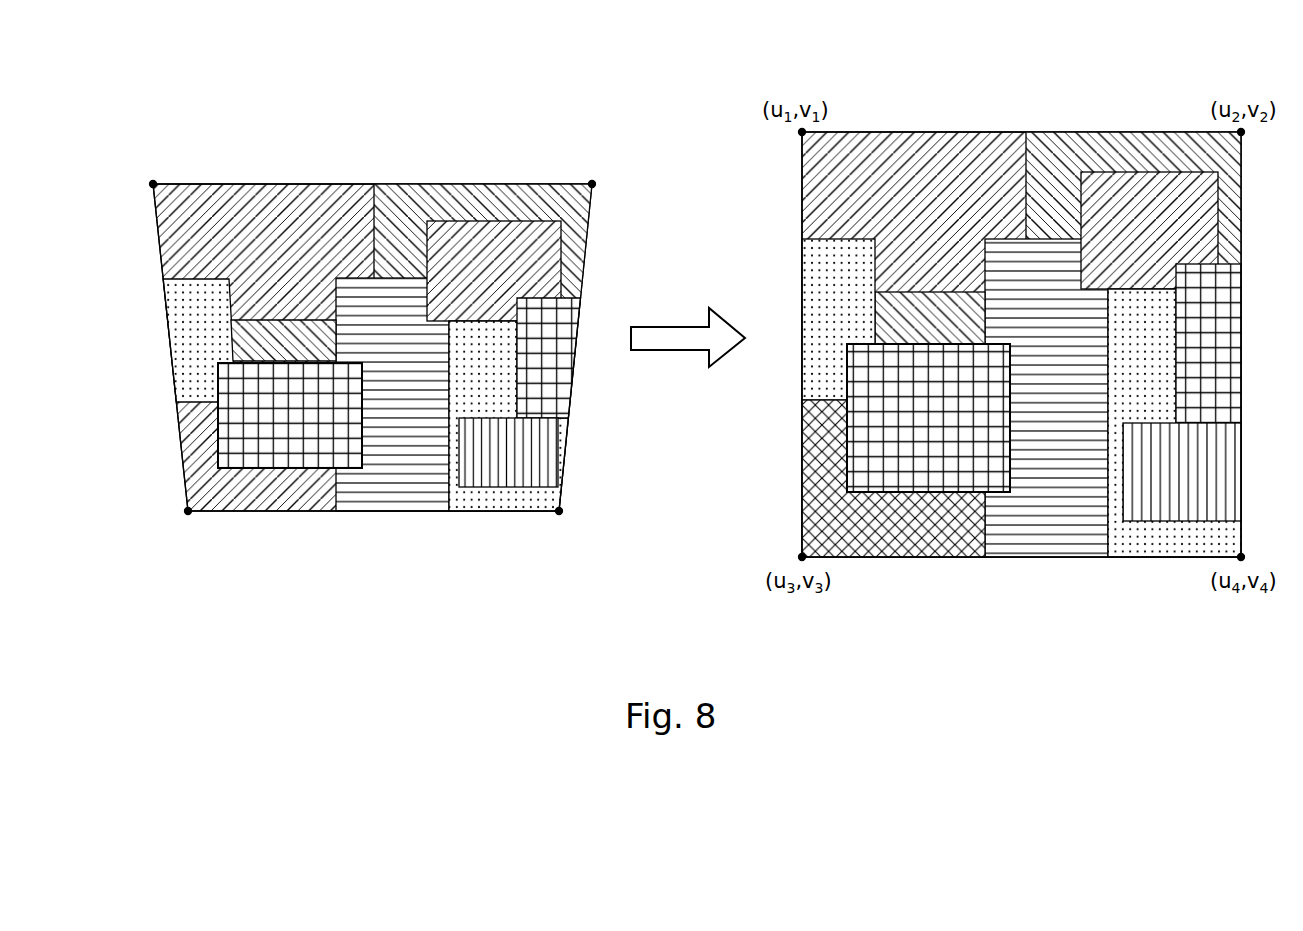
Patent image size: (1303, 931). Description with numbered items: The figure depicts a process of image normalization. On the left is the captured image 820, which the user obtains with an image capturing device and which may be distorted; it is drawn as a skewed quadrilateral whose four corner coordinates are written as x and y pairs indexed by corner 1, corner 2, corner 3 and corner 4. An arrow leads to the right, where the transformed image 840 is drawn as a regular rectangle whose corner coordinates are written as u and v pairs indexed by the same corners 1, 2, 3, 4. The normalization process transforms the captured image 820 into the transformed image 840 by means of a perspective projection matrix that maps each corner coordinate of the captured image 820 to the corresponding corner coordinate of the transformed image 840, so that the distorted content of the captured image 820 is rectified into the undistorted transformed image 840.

The captured image 820 is at (337, 184).
The transformed image 840 is at (963, 132).
The first corner point (x1,y1) 1 is at (143, 170).
The second corner point (x2,y2) 2 is at (598, 169).
The third corner point (x3,y3) 3 is at (188, 531).
The fourth corner point (x4,y4) 4 is at (558, 531).